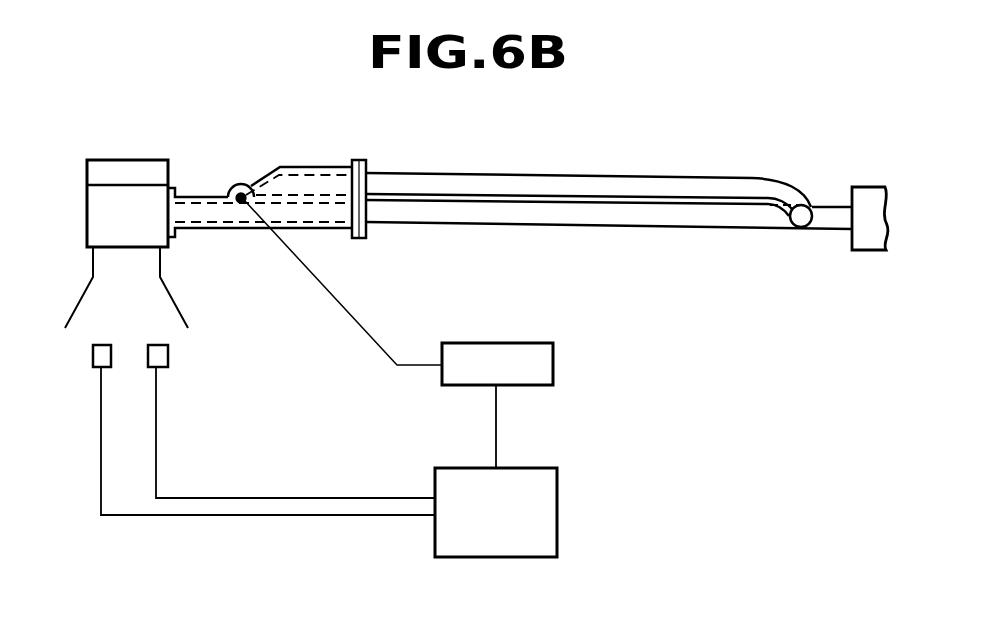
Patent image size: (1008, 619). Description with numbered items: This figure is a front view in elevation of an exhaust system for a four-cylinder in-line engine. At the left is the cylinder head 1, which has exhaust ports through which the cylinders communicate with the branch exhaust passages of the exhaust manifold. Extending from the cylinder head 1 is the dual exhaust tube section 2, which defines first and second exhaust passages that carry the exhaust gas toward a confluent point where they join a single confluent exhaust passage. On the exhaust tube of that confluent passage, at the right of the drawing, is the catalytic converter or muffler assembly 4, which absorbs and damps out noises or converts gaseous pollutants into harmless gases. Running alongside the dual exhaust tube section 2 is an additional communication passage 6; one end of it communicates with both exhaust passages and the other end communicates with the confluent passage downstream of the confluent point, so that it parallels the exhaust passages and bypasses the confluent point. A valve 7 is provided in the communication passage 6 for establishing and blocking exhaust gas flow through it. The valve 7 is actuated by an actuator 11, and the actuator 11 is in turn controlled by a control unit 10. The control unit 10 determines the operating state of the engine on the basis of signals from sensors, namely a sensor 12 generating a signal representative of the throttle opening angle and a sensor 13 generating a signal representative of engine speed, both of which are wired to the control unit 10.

The cylinder head 1 is at (132, 160).
The dual exhaust tube section 2 is at (470, 230).
The catalytic converter or muffler assembly 4 is at (872, 187).
The communication passage 6 is at (597, 188).
The valve 7 is at (288, 200).
The control unit 10 is at (557, 490).
The actuator 11 is at (553, 360).
The sensor 12 is at (93, 355).
The sensor 13 is at (148, 355).